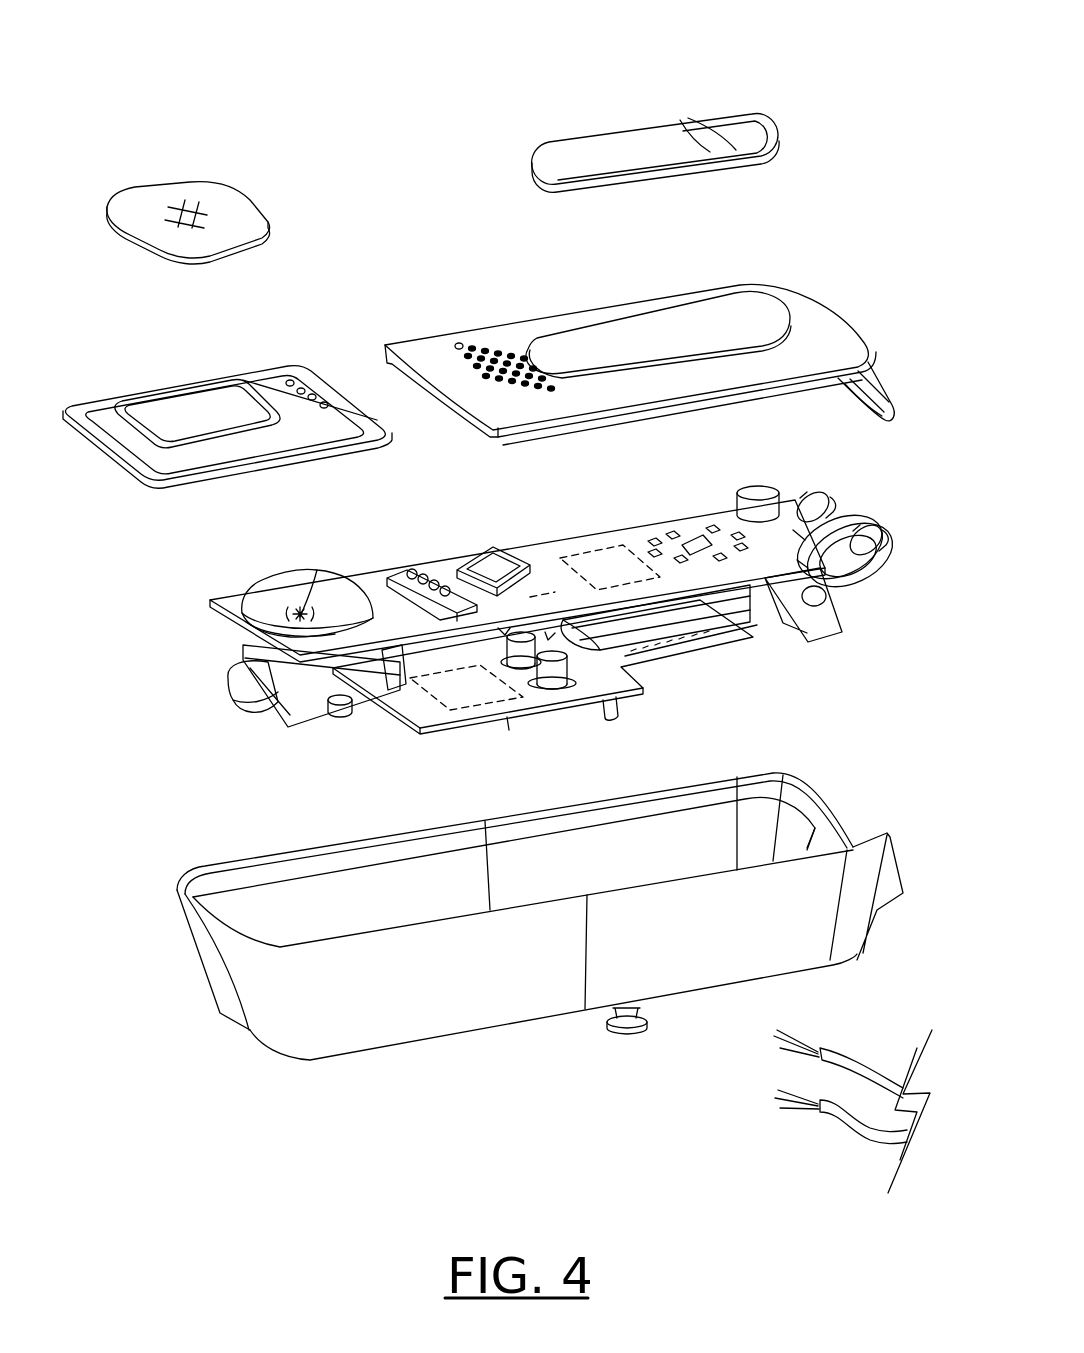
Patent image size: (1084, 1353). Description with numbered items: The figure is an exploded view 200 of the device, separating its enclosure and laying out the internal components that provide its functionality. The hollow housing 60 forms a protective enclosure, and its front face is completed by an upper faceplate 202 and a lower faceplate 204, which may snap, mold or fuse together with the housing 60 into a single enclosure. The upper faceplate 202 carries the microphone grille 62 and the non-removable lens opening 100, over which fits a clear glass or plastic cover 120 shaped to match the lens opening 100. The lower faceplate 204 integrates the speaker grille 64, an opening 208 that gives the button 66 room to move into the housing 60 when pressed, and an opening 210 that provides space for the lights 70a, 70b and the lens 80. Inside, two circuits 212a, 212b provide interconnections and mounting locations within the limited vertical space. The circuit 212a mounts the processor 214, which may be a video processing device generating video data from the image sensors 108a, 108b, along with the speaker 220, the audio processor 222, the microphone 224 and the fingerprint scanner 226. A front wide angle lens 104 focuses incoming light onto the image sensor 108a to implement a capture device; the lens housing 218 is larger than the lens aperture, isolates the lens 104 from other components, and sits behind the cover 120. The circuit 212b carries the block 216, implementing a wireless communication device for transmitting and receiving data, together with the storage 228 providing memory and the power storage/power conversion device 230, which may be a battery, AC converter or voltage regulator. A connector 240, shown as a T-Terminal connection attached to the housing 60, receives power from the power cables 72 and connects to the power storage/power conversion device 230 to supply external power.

The exploded view 200 is at (230, 30).
The cover 120 is at (140, 191).
The button 66 is at (588, 137).
The upper faceplate 202 is at (217, 399).
The lens opening 100 is at (173, 382).
The microphone grille 62 is at (308, 385).
The lower faceplate 204 is at (639, 338).
The opening 208 is at (645, 307).
The speaker grille 64 is at (462, 343).
The opening 210 is at (845, 388).
The circuit 212a is at (560, 576).
The lens housing 218 is at (278, 570).
The lens 104 is at (242, 636).
The microphone 224 is at (403, 570).
The speaker 220 is at (473, 545).
The audio processor 222 is at (493, 557).
The fingerprint scanner 226 is at (697, 535).
The processor 214 is at (624, 580).
The light 70b is at (830, 503).
The light 70a is at (880, 537).
The lens 80 is at (888, 577).
The image sensor 108b is at (812, 640).
The circuit 212b is at (559, 686).
The power storage/power conversion 230 is at (754, 632).
The storage 228 is at (684, 655).
The circuit 216 is at (485, 698).
The image sensor 108a is at (243, 700).
The housing 60 is at (540, 943).
The connector 240 is at (604, 1019).
The power cables 72 is at (840, 1130).